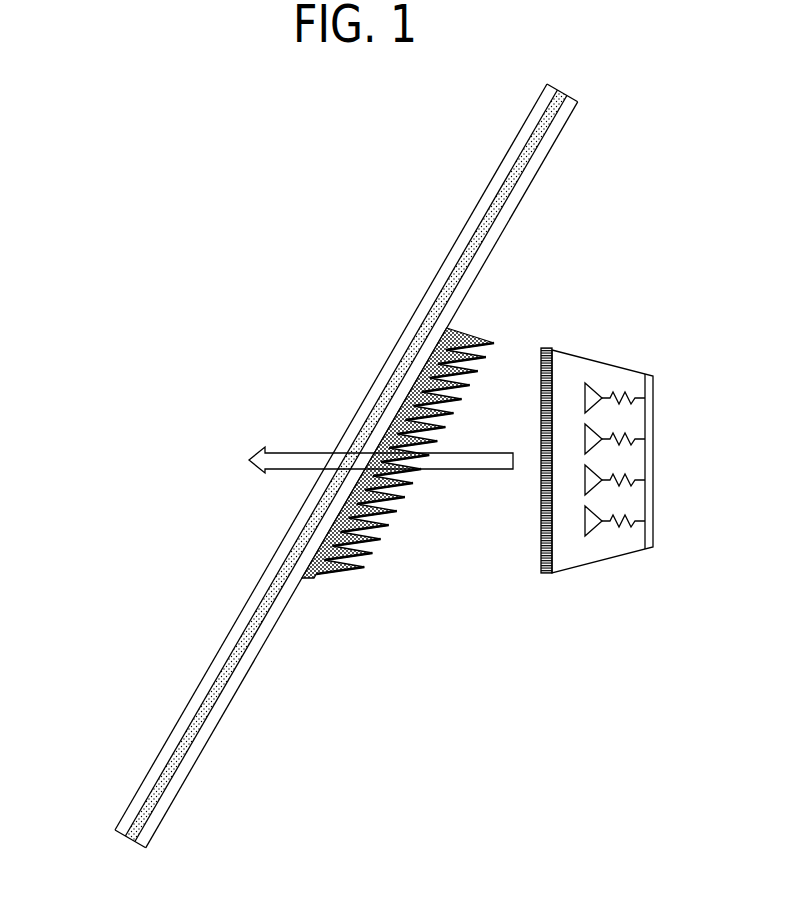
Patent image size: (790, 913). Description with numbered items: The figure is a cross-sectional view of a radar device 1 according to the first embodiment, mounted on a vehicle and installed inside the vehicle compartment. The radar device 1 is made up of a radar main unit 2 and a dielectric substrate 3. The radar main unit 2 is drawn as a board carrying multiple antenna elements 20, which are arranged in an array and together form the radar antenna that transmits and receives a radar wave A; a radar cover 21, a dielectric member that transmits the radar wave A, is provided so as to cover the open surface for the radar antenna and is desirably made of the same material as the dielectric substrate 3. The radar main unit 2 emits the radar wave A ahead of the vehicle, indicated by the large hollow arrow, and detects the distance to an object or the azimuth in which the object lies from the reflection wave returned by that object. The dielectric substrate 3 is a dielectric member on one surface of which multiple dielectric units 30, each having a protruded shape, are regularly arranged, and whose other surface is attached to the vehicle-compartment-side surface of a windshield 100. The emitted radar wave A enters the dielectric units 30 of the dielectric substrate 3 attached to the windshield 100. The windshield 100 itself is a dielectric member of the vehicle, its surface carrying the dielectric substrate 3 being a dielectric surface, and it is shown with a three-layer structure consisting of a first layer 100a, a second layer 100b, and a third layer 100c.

The radar device 1 is at (603, 253).
The radar main unit 2 is at (578, 568).
The dielectric substrate 3 is at (482, 333).
The antenna elements 20 is at (622, 531).
The radar cover 21 is at (541, 548).
The dielectric units 30 is at (343, 577).
The windshield 100 is at (508, 138).
The first layer 100a is at (179, 793).
The second layer 100b is at (128, 841).
The third layer 100c is at (148, 774).
The radar wave A is at (300, 452).